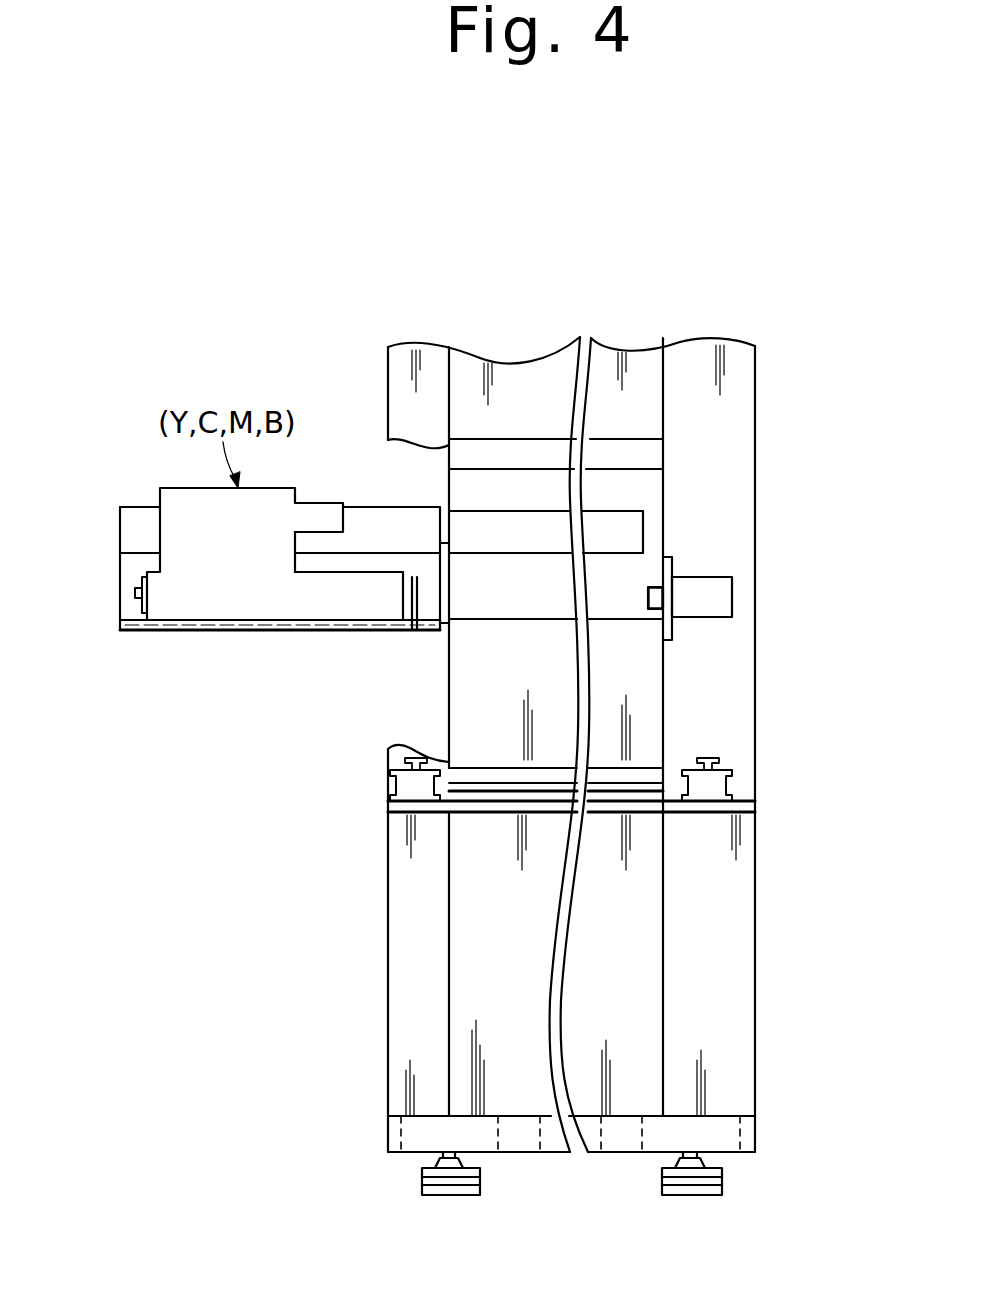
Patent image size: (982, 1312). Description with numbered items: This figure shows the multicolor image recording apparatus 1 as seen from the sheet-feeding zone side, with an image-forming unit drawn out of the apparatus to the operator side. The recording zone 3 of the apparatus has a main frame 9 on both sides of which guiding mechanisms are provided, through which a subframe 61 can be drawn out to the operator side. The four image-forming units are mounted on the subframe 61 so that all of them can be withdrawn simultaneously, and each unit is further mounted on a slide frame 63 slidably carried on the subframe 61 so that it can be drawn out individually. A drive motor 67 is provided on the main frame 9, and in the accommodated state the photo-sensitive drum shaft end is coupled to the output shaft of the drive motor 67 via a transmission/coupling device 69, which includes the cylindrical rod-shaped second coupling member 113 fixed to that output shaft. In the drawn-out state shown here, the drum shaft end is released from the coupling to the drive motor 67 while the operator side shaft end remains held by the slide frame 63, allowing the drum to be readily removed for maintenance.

The image recording apparatus 1 is at (576, 312).
The recording zone 3 is at (687, 333).
The main frame 9 is at (743, 428).
The subframe 61 is at (135, 625).
The slide frame 63 is at (128, 592).
The drive motor 67 is at (708, 598).
The second coupling member 113 is at (655, 609).
The transmission/coupling device 69 is at (769, 653).